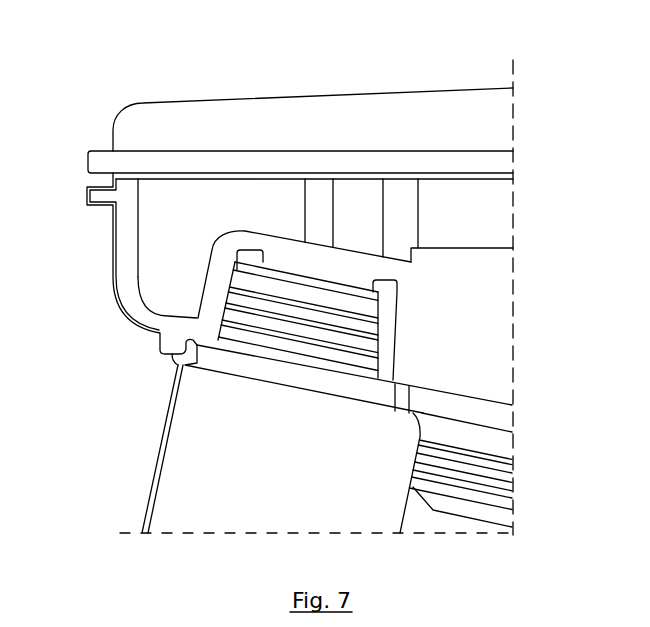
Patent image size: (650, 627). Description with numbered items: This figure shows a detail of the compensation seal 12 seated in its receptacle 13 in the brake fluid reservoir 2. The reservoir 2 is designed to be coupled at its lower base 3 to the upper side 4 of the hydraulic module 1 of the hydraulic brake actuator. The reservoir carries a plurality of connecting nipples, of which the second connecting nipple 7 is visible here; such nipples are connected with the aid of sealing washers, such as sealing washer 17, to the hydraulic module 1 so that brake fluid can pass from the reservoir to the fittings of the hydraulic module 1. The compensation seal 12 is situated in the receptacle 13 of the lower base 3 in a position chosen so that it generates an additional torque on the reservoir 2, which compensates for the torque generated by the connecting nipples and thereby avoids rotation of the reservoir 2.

The hydraulic module 1 is at (550, 448).
The brake fluid reservoir 2 is at (518, 53).
The lower base 3 is at (487, 168).
The upper side 4 is at (490, 182).
The second connecting nipple 7 is at (475, 521).
The compensation seal 12 is at (230, 297).
The receptacle 13 is at (280, 250).
The sealing washer 17 is at (510, 482).